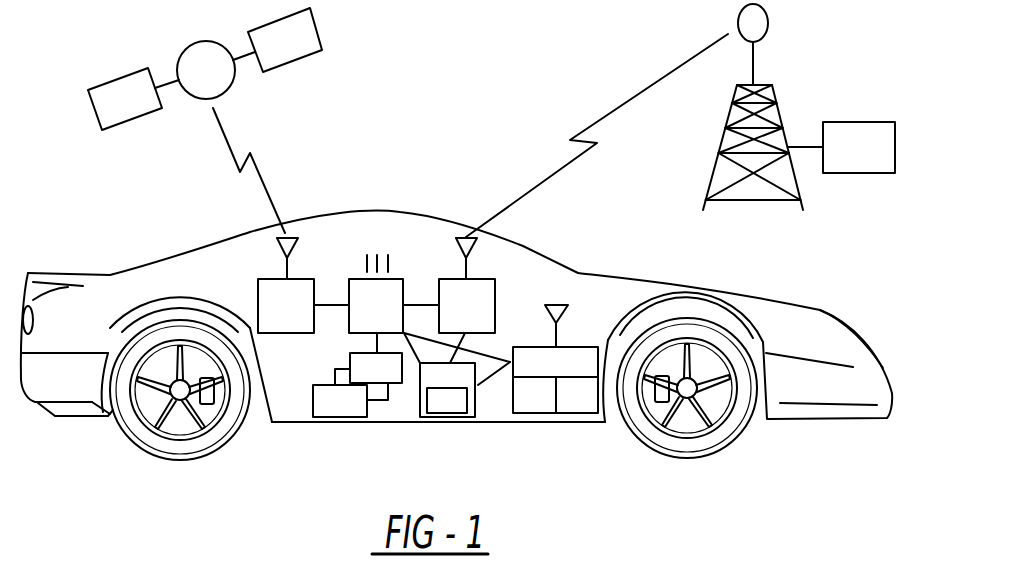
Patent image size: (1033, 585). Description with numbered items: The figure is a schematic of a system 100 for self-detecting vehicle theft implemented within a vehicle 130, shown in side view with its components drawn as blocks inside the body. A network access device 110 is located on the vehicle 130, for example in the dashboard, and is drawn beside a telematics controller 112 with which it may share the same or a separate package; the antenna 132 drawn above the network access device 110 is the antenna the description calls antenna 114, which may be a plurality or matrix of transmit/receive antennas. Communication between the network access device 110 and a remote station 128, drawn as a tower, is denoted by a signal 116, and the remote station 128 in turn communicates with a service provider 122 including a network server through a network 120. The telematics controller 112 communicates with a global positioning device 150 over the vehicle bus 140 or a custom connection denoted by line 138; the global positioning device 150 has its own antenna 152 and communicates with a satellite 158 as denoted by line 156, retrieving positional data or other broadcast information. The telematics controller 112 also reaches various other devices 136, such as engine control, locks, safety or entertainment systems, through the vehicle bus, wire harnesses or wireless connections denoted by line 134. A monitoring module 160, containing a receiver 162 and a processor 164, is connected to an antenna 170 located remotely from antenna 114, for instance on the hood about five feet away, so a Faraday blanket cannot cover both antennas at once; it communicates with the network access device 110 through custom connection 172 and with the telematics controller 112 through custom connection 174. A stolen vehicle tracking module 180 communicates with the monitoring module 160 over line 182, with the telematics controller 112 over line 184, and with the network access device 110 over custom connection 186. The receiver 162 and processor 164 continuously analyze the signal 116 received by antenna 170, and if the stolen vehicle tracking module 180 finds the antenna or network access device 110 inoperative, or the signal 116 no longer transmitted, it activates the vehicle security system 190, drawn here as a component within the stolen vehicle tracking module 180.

The system for self-detecting vehicle theft 100 is at (556, 72).
The network access device 110 is at (467, 306).
The telematics controller 112 is at (394, 306).
The antenna 114 is at (490, 255).
The signal 116 is at (635, 100).
The network 120 is at (803, 147).
The service provider 122 is at (860, 173).
The remote station 128 is at (757, 65).
The vehicle 130 is at (838, 420).
The telematics antenna 132 is at (422, 305).
The line 134 is at (377, 342).
The various other devices 136 is at (402, 385).
The line 138 is at (336, 304).
The vehicle bus 140 is at (381, 248).
The global positioning device 150 is at (303, 306).
The antenna 152 is at (275, 250).
The line 156 is at (263, 174).
The satellite 158 is at (198, 41).
The monitoring module 160 is at (555, 380).
The receiver 162 is at (537, 395).
The processor 164 is at (573, 399).
The antenna 170 is at (565, 316).
The custom connection 172 is at (570, 277).
The custom connection 174 is at (505, 358).
The stolen vehicle tracking module 180 is at (439, 375).
The line 182 is at (480, 386).
The line 184 is at (408, 345).
The custom connection 186 is at (467, 340).
The vehicle security system 190 is at (447, 402).